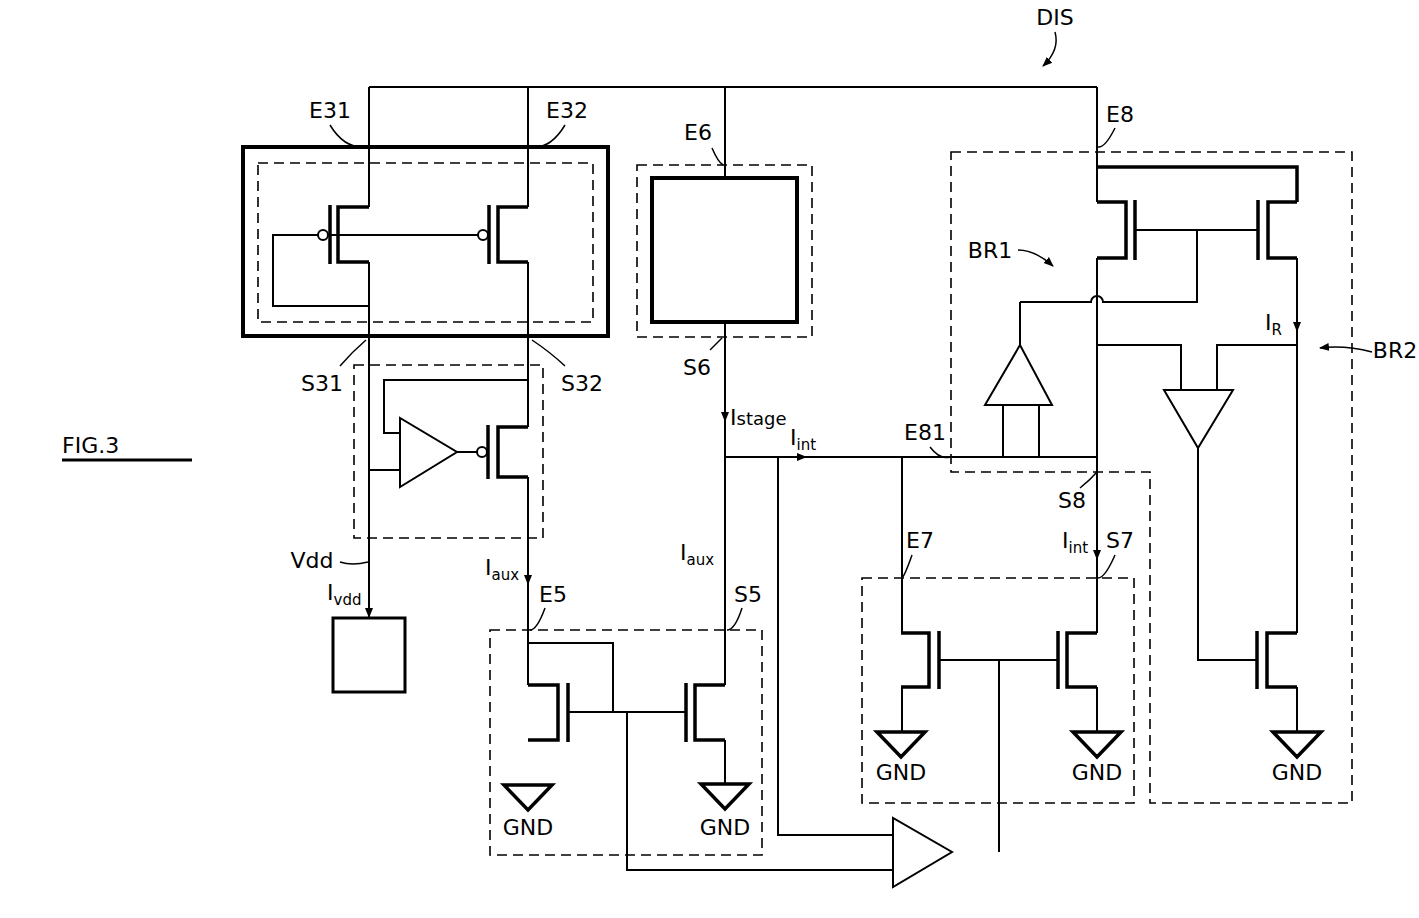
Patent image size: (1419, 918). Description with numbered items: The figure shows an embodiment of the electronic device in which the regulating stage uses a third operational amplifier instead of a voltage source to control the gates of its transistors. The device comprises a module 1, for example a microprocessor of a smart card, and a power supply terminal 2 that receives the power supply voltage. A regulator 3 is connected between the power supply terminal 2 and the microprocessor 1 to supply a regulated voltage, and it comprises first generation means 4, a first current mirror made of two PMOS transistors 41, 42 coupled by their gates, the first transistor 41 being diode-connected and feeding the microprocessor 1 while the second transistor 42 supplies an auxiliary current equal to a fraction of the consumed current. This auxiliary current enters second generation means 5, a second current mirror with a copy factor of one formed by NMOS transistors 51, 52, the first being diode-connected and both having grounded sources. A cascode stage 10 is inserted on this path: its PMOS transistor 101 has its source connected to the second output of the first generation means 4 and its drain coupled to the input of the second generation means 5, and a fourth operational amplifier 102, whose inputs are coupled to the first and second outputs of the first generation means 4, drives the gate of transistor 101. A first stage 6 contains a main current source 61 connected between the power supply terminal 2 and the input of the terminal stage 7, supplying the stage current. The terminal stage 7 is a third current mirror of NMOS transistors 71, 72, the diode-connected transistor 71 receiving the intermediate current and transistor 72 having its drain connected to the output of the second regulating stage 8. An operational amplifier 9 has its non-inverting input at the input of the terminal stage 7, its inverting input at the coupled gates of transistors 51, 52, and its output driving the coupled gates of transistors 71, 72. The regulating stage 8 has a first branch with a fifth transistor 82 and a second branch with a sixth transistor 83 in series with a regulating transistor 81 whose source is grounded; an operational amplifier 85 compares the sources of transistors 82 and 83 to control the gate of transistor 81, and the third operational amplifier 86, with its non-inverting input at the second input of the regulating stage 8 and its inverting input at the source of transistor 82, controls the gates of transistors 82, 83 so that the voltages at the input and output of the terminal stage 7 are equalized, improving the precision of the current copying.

The module 1 is at (333, 657).
The power supply terminal 2 is at (369, 85).
The regulator 3 is at (268, 147).
The first generation means 4 is at (440, 163).
The second generation means 5 is at (617, 630).
The first stage 6 is at (812, 196).
The terminal stage 7 is at (990, 578).
The second regulating stage 8 is at (1352, 478).
The operational amplifier 9 is at (940, 867).
The cascode stage 10 is at (354, 452).
The first transistor 41 is at (385, 250).
The second transistor 42 is at (544, 250).
The first NMOS transistor 51 is at (522, 710).
The second NMOS transistor 52 is at (731, 711).
The main current source 61 is at (797, 252).
The third transistor 71 is at (892, 658).
The fourth transistor 72 is at (1102, 658).
The regulating transistor 81 is at (1302, 658).
The fifth transistor 82 is at (1090, 227).
The sixth transistor 83 is at (1304, 227).
The operational amplifier 85 is at (1198, 377).
The third operational amplifier 86 is at (999, 357).
The seventh PMOS transistor 101 is at (531, 464).
The fourth operational amplifier 102 is at (437, 478).